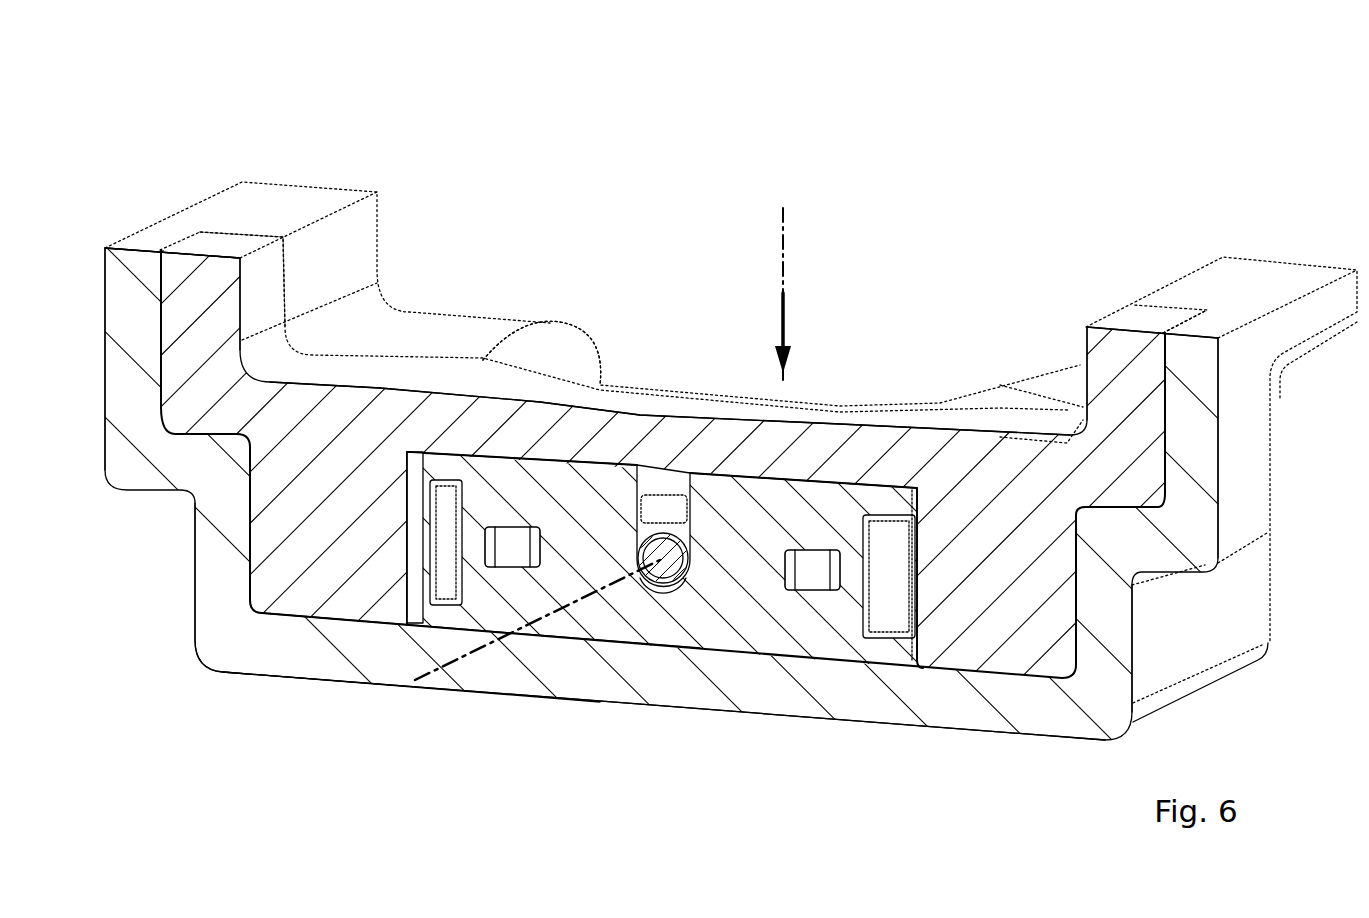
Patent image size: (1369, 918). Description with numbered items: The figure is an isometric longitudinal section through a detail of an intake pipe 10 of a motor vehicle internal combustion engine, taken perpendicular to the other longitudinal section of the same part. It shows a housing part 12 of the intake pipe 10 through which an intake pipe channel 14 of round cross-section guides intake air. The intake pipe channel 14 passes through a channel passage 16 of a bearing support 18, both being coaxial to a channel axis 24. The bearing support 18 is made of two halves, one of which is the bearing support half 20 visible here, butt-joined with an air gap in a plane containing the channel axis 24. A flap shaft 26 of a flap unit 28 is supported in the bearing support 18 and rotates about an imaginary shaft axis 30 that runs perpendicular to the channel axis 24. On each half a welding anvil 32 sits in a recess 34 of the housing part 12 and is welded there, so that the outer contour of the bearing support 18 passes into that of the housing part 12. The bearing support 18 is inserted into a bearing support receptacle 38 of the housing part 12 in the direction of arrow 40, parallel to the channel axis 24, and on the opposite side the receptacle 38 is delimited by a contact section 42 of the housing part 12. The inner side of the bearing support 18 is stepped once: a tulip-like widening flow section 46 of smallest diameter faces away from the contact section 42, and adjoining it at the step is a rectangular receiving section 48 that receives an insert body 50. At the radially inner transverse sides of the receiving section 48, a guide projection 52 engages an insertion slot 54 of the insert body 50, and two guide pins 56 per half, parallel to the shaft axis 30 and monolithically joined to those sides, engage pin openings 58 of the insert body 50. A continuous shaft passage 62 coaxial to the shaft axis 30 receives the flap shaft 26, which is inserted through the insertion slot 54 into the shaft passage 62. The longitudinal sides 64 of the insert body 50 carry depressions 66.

The intake pipe 10 is at (252, 119).
The housing part 12 is at (238, 188).
The intake pipe channel 14 is at (709, 389).
The channel passage 16 is at (985, 380).
The bearing support 18 is at (266, 527).
The bearing support half 20 is at (283, 478).
The channel axis 24 is at (783, 225).
The flap shaft 26 is at (670, 570).
The flap unit 28 is at (640, 578).
The shaft axis 30 is at (460, 665).
The welding anvil 32 is at (185, 255).
The recess 34 is at (253, 237).
The bearing support receptacle 38 is at (282, 615).
The arrow 40 is at (783, 293).
The contact section 42 is at (292, 647).
The flow section 46 is at (562, 345).
The receiving section 48 is at (1038, 573).
The insert body 50 is at (800, 630).
The guide projection 52 is at (652, 482).
The insertion slot 54 is at (687, 513).
The guide pin 56 is at (513, 540).
The pin opening 58 is at (490, 565).
The shaft passage 62 is at (657, 590).
The longitudinal side 64 is at (430, 540).
The depression 66 is at (452, 505).